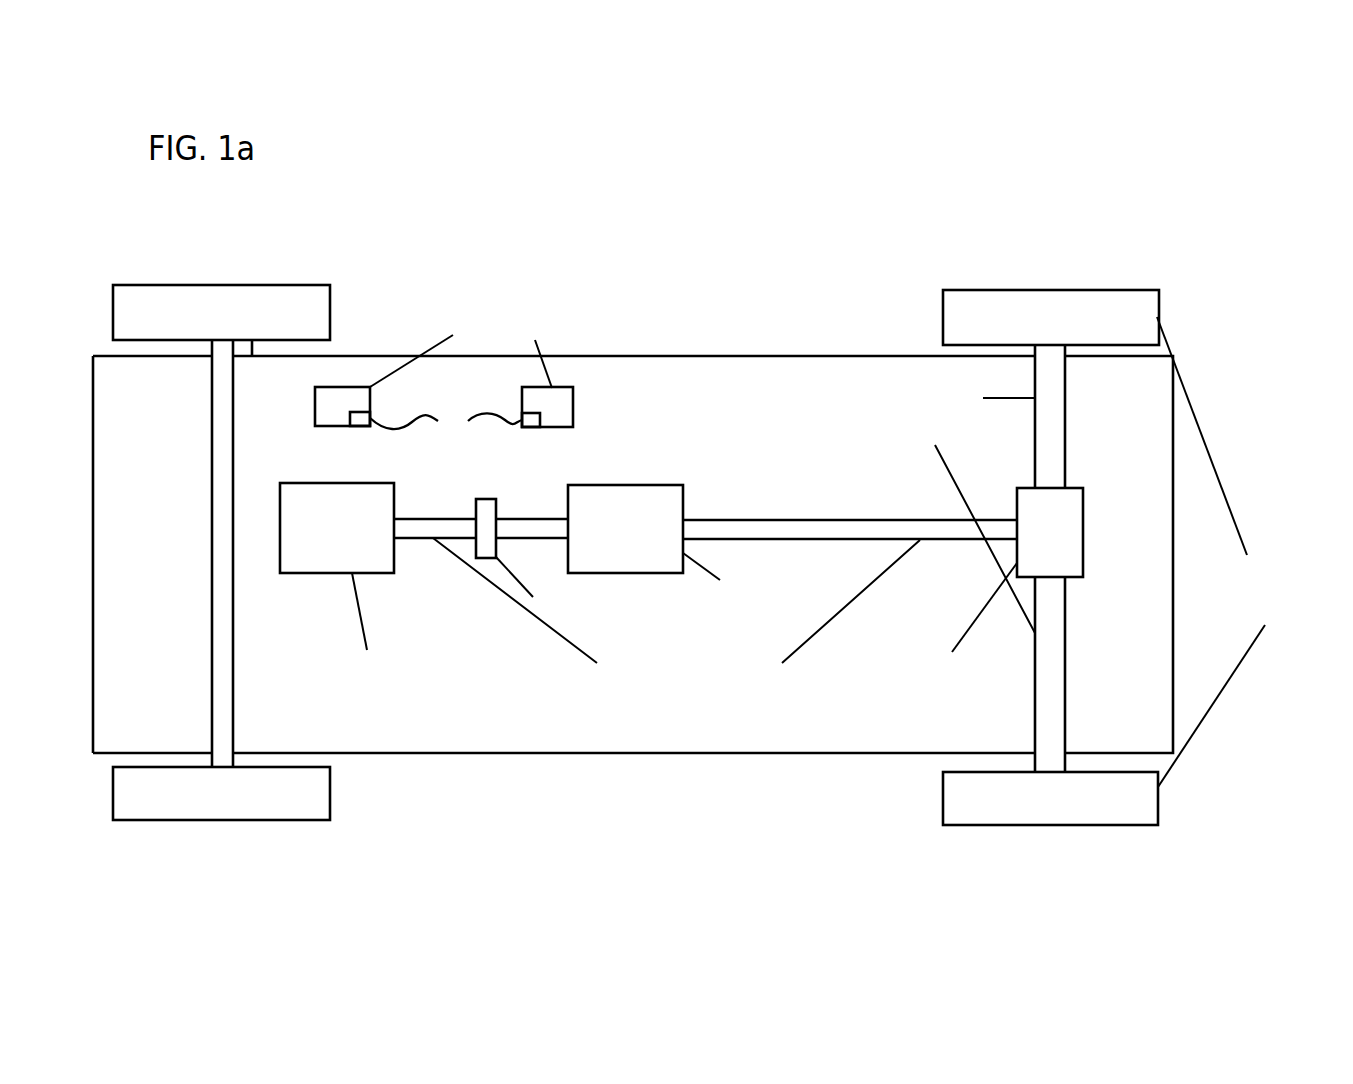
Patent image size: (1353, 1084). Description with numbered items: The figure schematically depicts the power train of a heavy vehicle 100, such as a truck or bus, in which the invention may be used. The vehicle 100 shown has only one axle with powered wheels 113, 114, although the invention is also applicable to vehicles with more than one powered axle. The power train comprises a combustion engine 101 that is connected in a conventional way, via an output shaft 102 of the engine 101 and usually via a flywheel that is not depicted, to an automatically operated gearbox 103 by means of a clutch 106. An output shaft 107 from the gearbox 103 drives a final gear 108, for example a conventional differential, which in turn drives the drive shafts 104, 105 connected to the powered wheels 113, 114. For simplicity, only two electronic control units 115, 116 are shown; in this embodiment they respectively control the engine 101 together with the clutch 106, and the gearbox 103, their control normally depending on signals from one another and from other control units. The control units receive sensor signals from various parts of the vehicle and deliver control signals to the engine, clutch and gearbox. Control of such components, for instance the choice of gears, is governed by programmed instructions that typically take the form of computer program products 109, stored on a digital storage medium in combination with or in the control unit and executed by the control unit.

The heavy vehicle 100 is at (541, 195).
The combustion engine 101 is at (315, 560).
The output shaft of the engine 102 is at (418, 522).
The gearbox 103 is at (628, 497).
The drive shaft 104 is at (1065, 414).
The drive shaft 105 is at (1065, 680).
The clutch 106 is at (482, 548).
The output shaft from the gearbox 107 is at (938, 535).
The final gear 108 is at (1084, 525).
The computer program products 109 is at (446, 419).
The powered wheel 113 is at (1155, 310).
The powered wheel 114 is at (1158, 800).
The electronic control unit 115 is at (573, 400).
The electronic control unit 116 is at (462, 351).